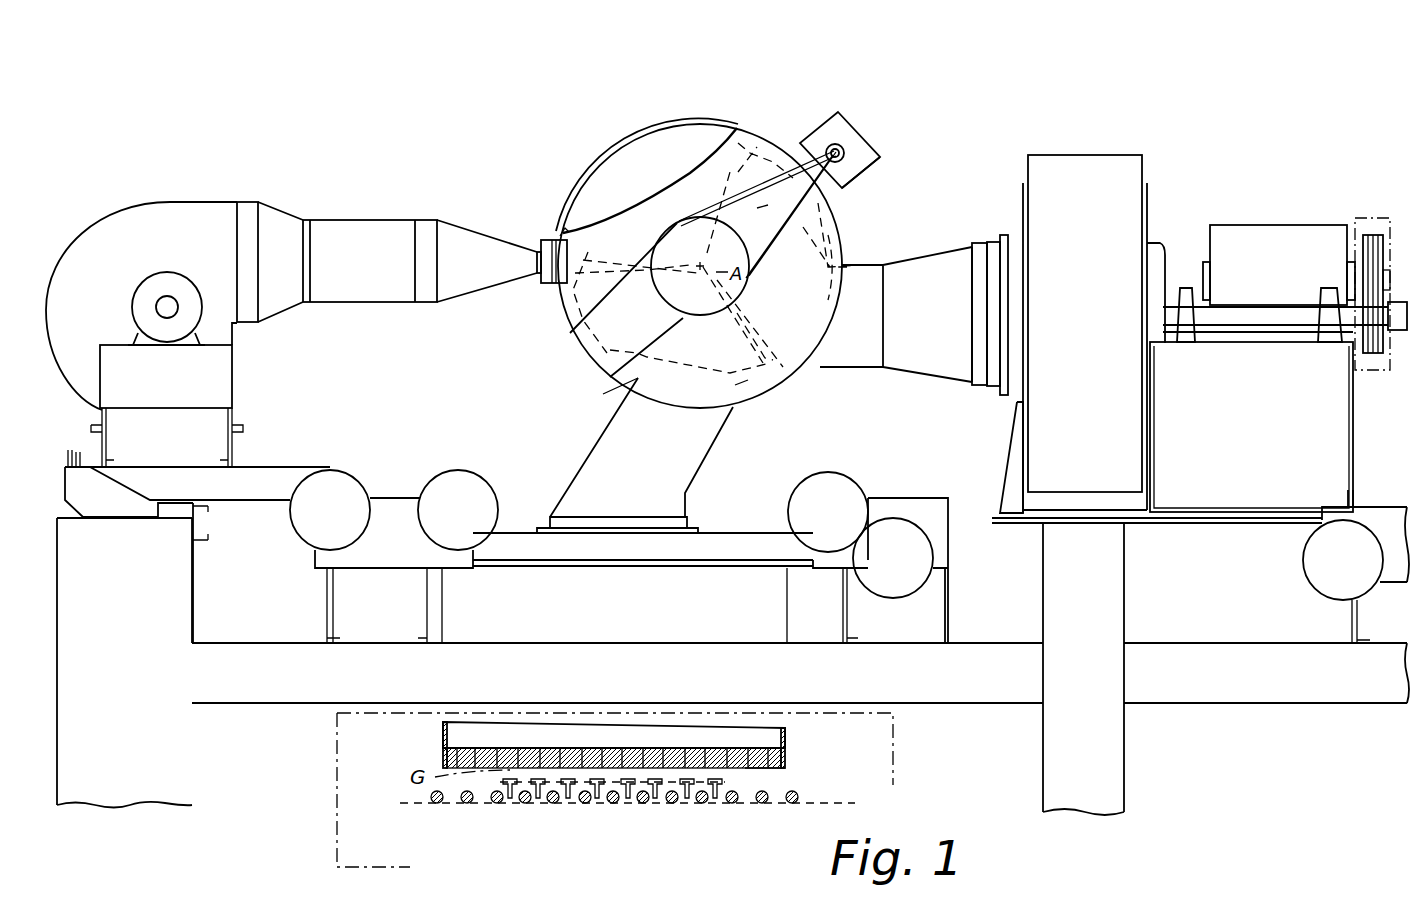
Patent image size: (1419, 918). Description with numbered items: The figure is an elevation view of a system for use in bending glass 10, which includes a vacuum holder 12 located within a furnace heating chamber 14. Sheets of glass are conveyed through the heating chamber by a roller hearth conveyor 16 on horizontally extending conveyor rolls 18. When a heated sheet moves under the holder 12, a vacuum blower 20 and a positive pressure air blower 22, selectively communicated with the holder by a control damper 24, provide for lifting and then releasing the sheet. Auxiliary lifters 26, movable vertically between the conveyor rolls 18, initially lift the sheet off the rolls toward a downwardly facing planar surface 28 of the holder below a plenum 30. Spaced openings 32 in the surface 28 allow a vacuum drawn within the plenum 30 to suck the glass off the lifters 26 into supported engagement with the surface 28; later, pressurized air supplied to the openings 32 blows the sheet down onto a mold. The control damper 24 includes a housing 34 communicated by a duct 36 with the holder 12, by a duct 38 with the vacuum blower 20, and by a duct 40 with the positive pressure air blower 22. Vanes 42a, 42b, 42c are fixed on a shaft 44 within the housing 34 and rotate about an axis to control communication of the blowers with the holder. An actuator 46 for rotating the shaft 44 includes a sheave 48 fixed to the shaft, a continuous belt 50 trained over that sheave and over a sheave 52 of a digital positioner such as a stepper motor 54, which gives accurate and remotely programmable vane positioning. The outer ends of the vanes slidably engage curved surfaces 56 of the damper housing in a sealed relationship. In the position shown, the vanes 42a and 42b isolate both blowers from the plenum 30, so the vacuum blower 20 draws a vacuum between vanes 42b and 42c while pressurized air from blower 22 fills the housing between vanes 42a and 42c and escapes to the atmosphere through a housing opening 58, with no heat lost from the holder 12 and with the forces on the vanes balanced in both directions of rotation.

The system for use in bending glass 10 is at (940, 96).
The vacuum holder 12 is at (440, 730).
The furnace heating chamber 14 is at (330, 783).
The roller hearth conveyor 16 is at (799, 796).
The conveyor rolls 18 is at (787, 801).
The vacuum blower 20 is at (1244, 230).
The positive pressure air blower 22 is at (72, 243).
The control damper 24 is at (763, 130).
The auxiliary lifters 26 is at (655, 803).
The downwardly facing planar surface 28 is at (757, 772).
The plenum 30 is at (494, 737).
The spaced openings 32 is at (717, 753).
The housing 34 is at (843, 225).
The duct 36 is at (682, 455).
The duct 38 is at (900, 348).
The duct 40 is at (497, 252).
The vane 42a is at (671, 302).
The vane 42b is at (765, 323).
The vane 42c is at (650, 180).
The shaft 44 is at (689, 260).
The actuator 46 is at (852, 110).
The sheave 48 is at (677, 293).
The continuous belt 50 is at (767, 260).
The sheave 52 is at (847, 150).
The stepper motor 54 is at (860, 168).
The curved surfaces 56 is at (695, 291).
The housing opening 58 is at (690, 125).